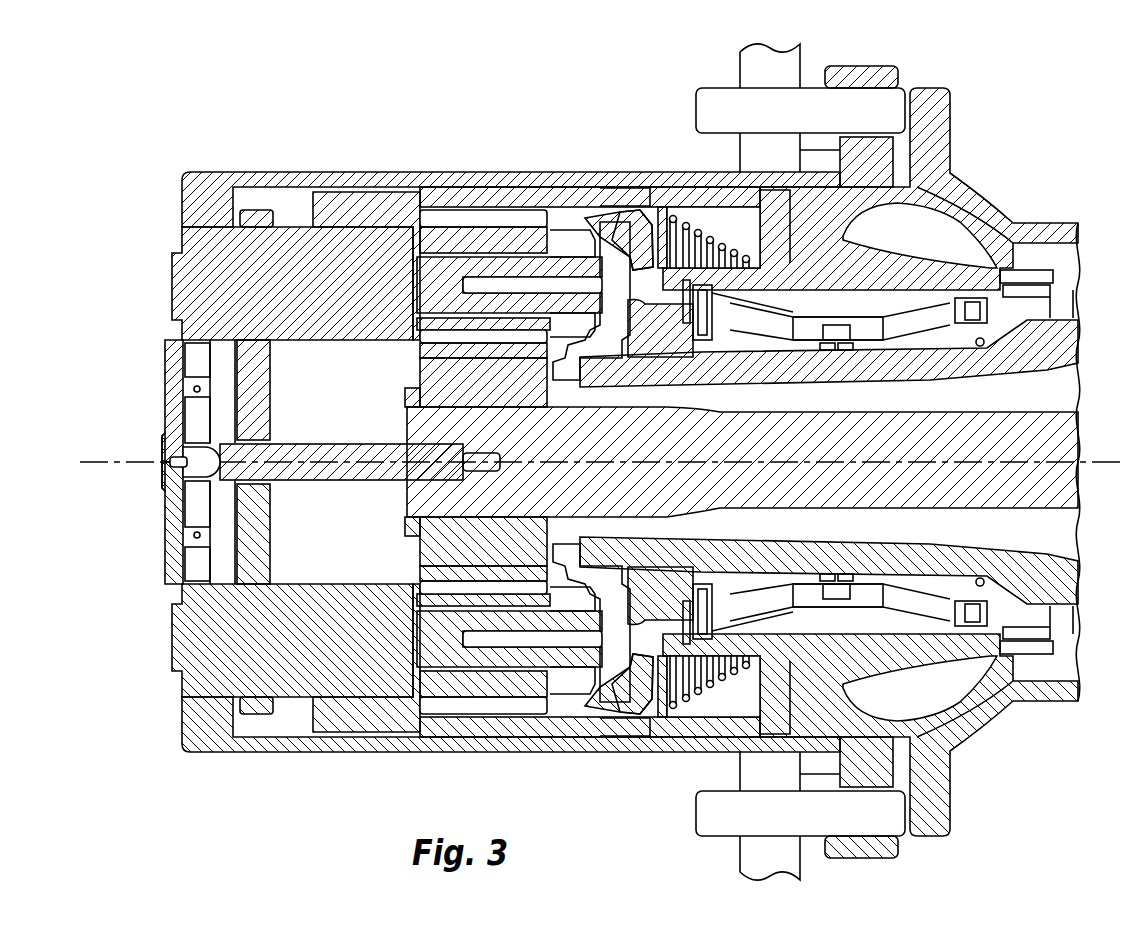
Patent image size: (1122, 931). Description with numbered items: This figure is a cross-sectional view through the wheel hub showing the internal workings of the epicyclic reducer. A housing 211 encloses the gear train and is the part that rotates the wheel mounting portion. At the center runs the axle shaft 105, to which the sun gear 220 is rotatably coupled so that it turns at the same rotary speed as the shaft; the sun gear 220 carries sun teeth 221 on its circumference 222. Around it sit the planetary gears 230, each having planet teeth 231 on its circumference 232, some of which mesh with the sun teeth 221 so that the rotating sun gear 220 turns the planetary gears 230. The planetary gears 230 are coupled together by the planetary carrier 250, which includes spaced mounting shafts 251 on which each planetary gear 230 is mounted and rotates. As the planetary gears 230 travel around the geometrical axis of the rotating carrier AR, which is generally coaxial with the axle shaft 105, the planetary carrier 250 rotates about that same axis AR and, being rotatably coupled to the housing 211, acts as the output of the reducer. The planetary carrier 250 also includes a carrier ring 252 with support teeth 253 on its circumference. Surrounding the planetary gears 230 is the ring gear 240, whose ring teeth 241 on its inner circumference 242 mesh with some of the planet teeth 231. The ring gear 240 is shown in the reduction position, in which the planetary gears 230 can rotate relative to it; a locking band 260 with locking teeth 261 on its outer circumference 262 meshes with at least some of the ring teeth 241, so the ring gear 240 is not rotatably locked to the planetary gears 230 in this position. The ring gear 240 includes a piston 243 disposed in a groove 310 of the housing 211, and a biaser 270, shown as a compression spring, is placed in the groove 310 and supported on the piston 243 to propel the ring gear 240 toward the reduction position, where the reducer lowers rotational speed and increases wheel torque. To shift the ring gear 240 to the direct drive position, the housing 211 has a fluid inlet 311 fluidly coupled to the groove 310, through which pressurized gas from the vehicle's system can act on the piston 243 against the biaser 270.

The axle shaft 105 is at (838, 493).
The housing 211 is at (210, 178).
The sun gear 220 is at (523, 385).
The sun teeth 221 is at (418, 352).
The circumference of the sun gear 222 is at (417, 392).
The planetary gears 230 is at (411, 245).
The planet teeth 231 is at (413, 337).
The circumference of the planetary gear 232 is at (438, 308).
The ring gear 240 is at (421, 186).
The ring teeth 241 is at (463, 209).
The inner circumference of the ring gear 242 is at (482, 226).
The piston 243 is at (783, 225).
The planetary carrier 250 is at (176, 285).
The mounting shafts 251 is at (518, 265).
The carrier ring 252 is at (243, 362).
The support teeth 253 is at (253, 212).
The locking band 260 is at (630, 222).
The locking teeth 261 is at (613, 186).
The outer circumference of the locking band 262 is at (583, 230).
The biaser 270 is at (722, 212).
The groove 310 is at (732, 170).
The fluid inlet 311 is at (843, 228).
The geometrical axis of the rotating carrier AR is at (132, 463).